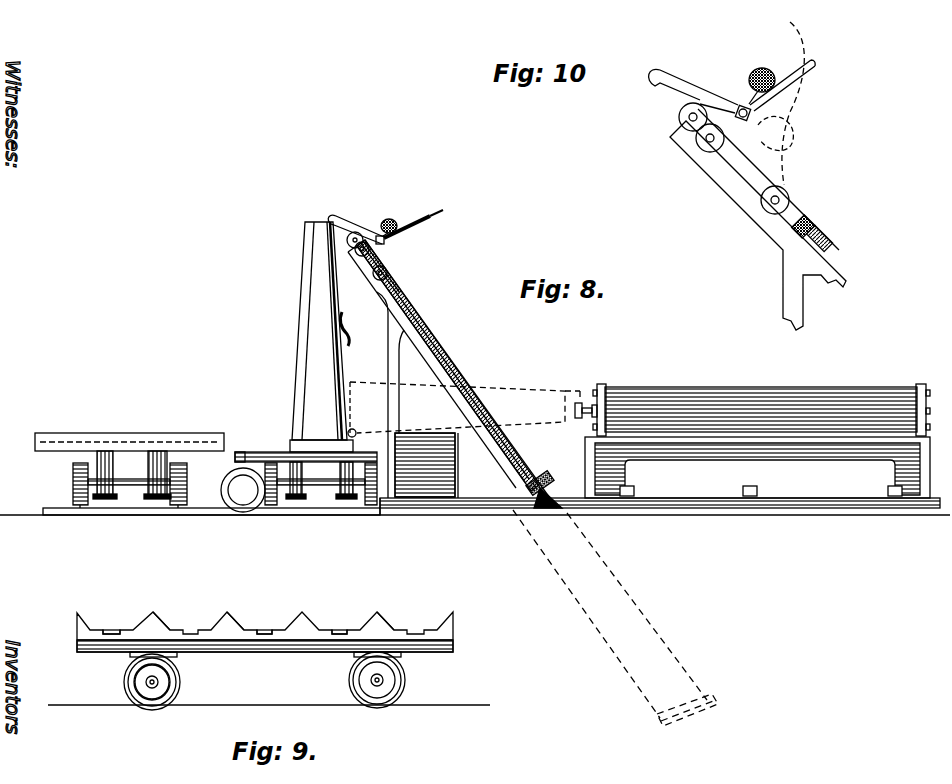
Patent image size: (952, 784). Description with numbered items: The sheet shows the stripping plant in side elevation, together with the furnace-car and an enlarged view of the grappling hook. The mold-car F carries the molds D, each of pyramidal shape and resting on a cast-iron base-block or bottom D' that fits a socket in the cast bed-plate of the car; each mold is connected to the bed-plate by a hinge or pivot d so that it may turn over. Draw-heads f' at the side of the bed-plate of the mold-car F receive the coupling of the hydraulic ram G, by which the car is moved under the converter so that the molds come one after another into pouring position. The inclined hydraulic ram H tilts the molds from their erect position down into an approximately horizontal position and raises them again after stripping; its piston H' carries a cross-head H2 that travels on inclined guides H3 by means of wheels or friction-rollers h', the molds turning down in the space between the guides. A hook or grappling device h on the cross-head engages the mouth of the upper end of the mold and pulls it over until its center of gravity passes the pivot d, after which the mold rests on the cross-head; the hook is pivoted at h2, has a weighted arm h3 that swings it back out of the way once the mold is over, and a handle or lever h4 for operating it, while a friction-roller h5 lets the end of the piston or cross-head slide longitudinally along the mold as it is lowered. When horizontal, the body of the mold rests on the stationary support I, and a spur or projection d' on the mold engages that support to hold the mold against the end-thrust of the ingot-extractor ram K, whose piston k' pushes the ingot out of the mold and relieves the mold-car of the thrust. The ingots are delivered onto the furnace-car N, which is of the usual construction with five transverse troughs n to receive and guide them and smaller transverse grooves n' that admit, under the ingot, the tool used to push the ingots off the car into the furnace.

In FIG. 8, the furnace-car N is at (145, 436).
In FIG. 9, the furnace-car N is at (262, 650).
In FIG. 9, the transverse troughs n is at (280, 611).
In FIG. 9, the transverse grooves n' is at (228, 617).
In FIG. 8, the mold-car F is at (257, 452).
In FIG. 8, the draw-heads f' is at (222, 466).
In FIG. 8, the hydraulic ram G is at (240, 498).
In FIG. 8, the mold D is at (319, 331).
In FIG. 8, the base-block D' is at (321, 428).
In FIG. 8, the hinge or pivot d is at (357, 409).
In FIG. 8, the spur or projection d' is at (353, 340).
In FIG. 8, the inclined hydraulic ram H is at (455, 374).
In FIG. 10, the inclined hydraulic ram H is at (758, 225).
In FIG. 8, the piston H' is at (457, 374).
In FIG. 10, the piston H' is at (824, 228).
In FIG. 8, the cross-head H2 is at (396, 280).
In FIG. 10, the cross-head H2 is at (747, 172).
In FIG. 8, the inclined guides H3 is at (428, 328).
In FIG. 8, the support bracket I is at (417, 436).
In FIG. 8, the ingot-extractor hydraulic ram K is at (757, 441).
In FIG. 8, the piston k' is at (567, 387).
In FIG. 8, the hook or grappling device h is at (356, 220).
In FIG. 10, the hook or grappling device h is at (693, 79).
In FIG. 8, the friction-rollers h' is at (326, 275).
In FIG. 10, the friction-rollers h' is at (718, 182).
In FIG. 8, the pivot h2 is at (388, 242).
In FIG. 10, the pivot h2 is at (752, 113).
In FIG. 8, the weighted arm h3 is at (393, 220).
In FIG. 10, the weighted arm h3 is at (761, 67).
In FIG. 8, the handle or lever h4 is at (420, 222).
In FIG. 10, the handle or lever h4 is at (812, 68).
In FIG. 8, the friction-roller h5 is at (360, 232).
In FIG. 10, the friction-roller h5 is at (679, 115).